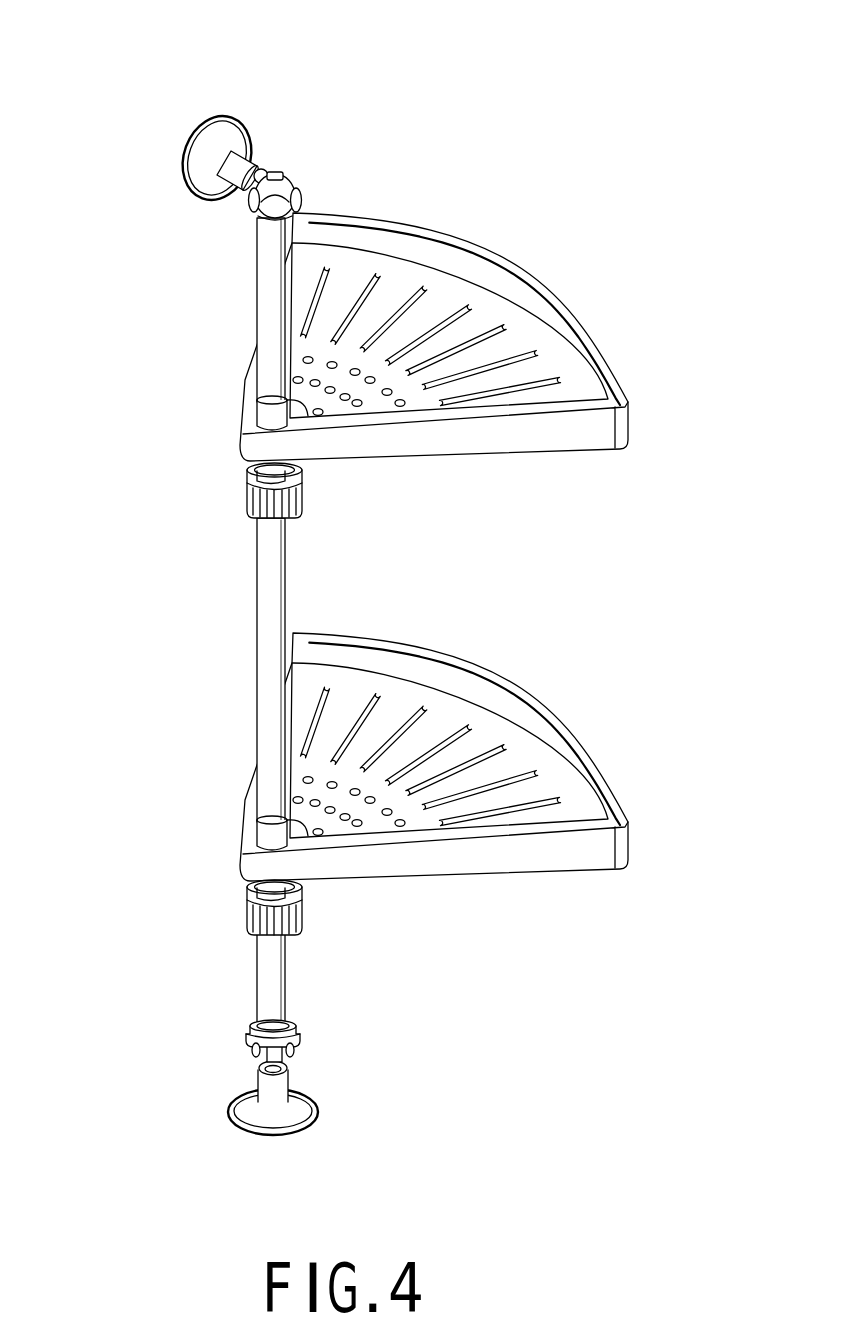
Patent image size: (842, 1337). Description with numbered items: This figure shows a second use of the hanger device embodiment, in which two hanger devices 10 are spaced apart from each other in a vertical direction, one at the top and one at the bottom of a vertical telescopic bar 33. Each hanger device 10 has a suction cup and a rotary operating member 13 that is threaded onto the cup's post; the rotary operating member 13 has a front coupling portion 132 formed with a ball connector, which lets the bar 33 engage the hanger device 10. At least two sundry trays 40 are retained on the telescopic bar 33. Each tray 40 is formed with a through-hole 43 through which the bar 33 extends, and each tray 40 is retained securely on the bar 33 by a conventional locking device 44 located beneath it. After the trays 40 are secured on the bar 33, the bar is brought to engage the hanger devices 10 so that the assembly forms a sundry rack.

The hanger device 10 is at (237, 567).
The rotary operating member 13 is at (183, 166).
The front coupling portion 132 is at (255, 145).
The telescopic bar 33 is at (262, 605).
The sundry tray 40 is at (478, 234).
The through-hole 43 is at (252, 431).
The locking device 44 is at (247, 492).